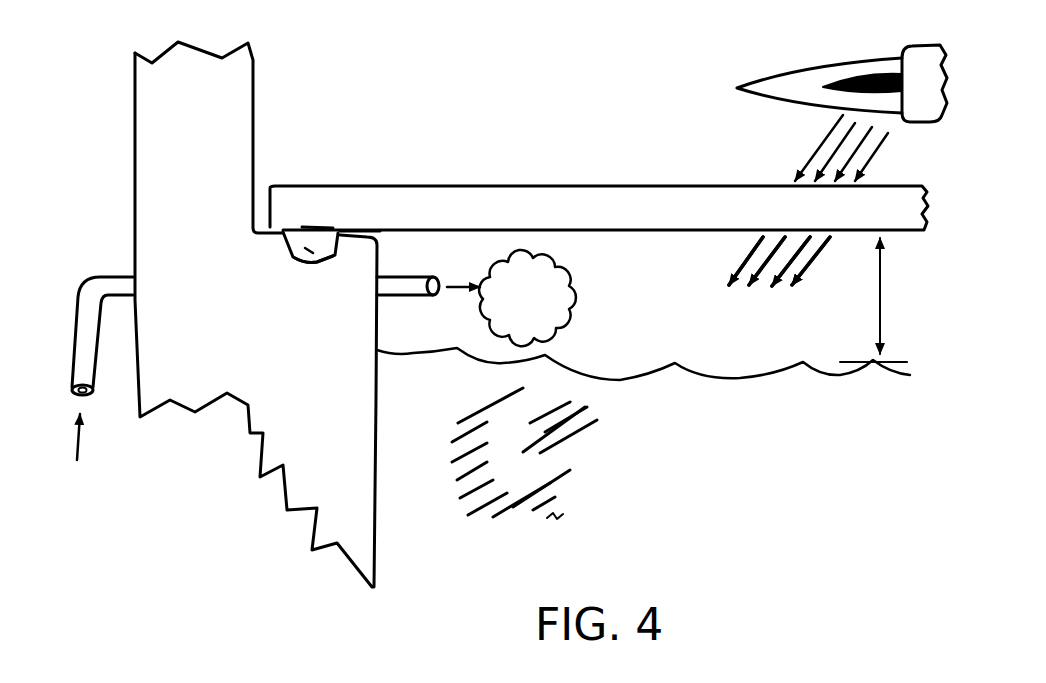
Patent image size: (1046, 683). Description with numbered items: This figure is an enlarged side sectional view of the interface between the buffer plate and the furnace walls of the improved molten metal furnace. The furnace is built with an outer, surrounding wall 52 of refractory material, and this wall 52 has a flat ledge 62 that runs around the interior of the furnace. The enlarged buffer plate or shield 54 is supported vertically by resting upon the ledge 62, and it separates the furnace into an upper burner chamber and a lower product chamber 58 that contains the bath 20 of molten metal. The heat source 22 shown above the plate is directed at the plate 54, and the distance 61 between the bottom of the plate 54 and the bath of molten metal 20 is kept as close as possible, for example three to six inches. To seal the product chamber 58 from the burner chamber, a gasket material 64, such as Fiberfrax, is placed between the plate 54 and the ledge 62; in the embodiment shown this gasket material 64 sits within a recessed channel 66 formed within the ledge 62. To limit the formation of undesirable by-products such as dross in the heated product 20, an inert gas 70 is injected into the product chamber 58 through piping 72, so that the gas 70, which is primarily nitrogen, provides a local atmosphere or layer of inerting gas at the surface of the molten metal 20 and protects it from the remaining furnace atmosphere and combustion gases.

The substrate 20 is at (524, 453).
The torch 22 is at (920, 60).
The shield body 52 is at (230, 115).
The plate 54 is at (575, 200).
The gas space 58 is at (675, 312).
The distance 61 is at (882, 287).
The edge 62 is at (360, 231).
The seal 64 is at (320, 263).
The seal lip 66 is at (280, 250).
The nitrogen gas cloud 70 is at (537, 273).
The nitrogen inlet tube 72 is at (92, 290).